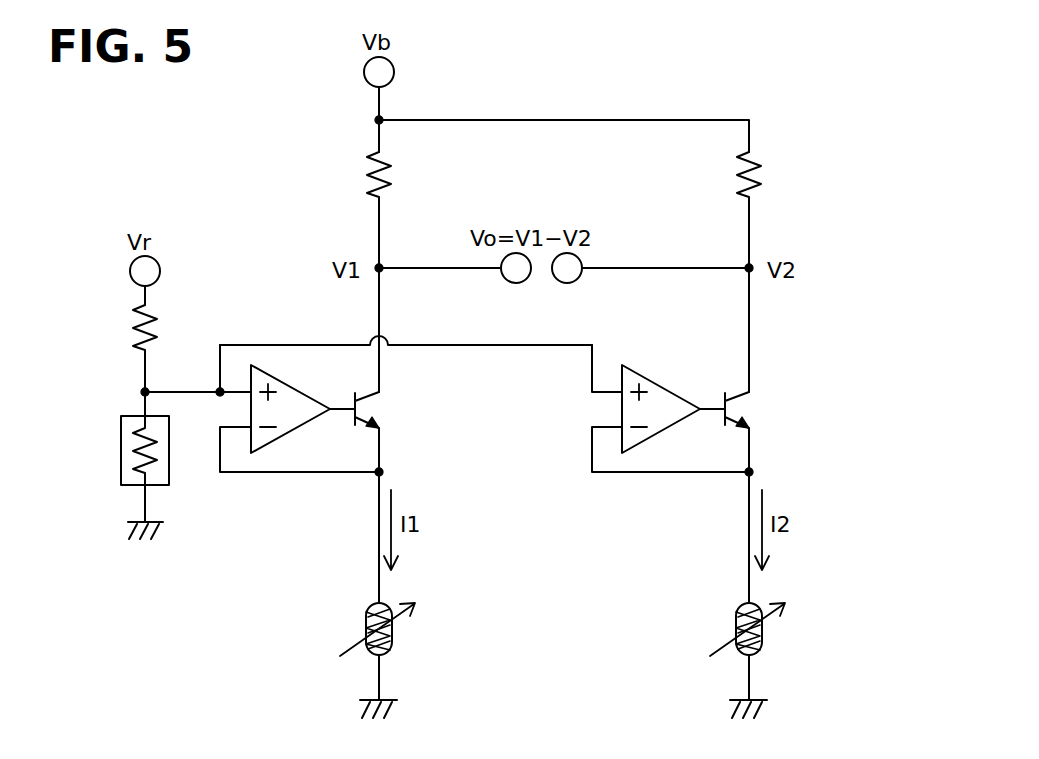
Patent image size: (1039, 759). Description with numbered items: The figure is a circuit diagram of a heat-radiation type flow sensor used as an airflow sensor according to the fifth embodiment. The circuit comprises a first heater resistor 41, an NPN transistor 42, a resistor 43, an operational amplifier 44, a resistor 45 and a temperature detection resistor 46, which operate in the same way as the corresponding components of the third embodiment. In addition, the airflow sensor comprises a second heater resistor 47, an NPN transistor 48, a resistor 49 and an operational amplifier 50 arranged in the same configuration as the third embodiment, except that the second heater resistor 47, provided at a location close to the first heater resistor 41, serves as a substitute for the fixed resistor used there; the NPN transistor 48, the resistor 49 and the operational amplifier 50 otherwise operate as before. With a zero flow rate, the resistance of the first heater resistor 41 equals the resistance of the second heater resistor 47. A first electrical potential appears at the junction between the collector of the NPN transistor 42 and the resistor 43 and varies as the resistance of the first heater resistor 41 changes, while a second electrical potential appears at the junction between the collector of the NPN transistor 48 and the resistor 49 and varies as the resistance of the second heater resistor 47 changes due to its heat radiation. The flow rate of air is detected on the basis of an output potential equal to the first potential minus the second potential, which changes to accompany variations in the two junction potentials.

The first heater resistor 41 is at (393, 640).
The NPN transistor 42 is at (368, 397).
The resistor 43 is at (394, 172).
The operational amplifier 44 is at (300, 388).
The resistor 45 is at (160, 320).
The temperature detection resistor 46 is at (170, 465).
The second heater resistor 47 is at (763, 640).
The NPN transistor 48 is at (738, 397).
The resistor 49 is at (736, 173).
The operational amplifier 50 is at (668, 385).